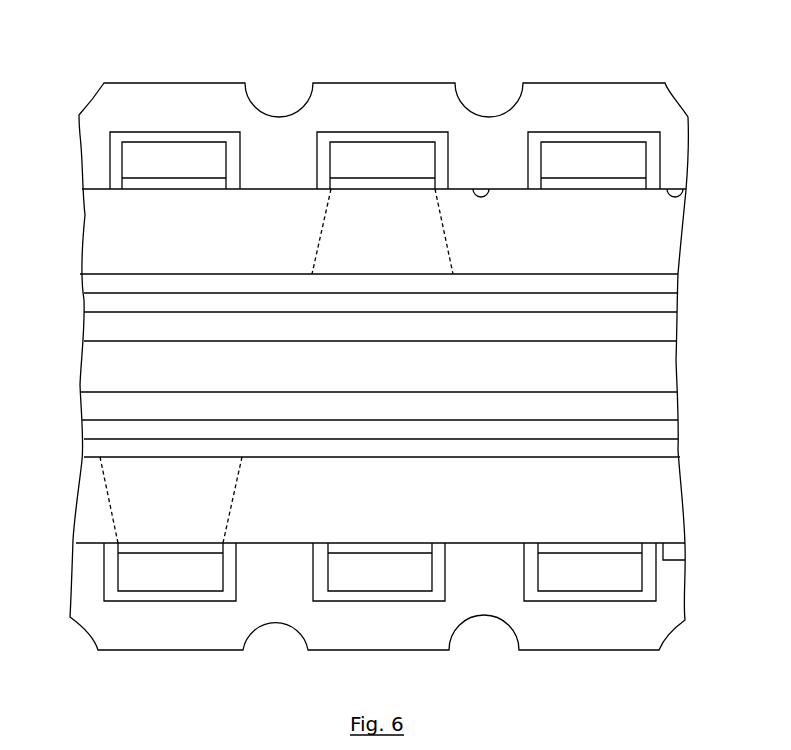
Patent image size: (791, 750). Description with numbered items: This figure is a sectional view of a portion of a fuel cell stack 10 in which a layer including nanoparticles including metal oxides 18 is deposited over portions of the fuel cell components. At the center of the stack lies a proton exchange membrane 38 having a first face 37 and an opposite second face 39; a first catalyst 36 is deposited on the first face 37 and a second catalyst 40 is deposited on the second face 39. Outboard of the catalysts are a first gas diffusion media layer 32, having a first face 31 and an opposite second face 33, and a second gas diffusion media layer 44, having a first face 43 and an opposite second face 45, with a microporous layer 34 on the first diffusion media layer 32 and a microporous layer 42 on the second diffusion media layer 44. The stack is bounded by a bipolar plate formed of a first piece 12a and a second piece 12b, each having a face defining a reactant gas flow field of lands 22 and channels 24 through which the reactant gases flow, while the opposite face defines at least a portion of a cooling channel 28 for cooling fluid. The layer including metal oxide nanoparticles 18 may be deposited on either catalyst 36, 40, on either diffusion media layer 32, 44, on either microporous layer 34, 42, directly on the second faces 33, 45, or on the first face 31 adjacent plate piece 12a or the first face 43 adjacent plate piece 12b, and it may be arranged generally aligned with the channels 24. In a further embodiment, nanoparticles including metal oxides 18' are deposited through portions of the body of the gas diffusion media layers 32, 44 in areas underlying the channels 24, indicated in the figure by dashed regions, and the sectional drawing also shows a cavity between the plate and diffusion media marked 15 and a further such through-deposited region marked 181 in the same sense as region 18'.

The semiconductor device 10 is at (82, 72).
The first piece 12a is at (667, 127).
The second piece 12b is at (670, 593).
The chip 15 is at (600, 140).
The layer including nanoparticles including metal oxides 18 is at (410, 364).
The nanoparticles including metal oxides 18' is at (245, 253).
The metal via region 181 is at (100, 482).
The lands 22 is at (480, 197).
The channels 24 is at (335, 170).
The cooling channel 28 is at (380, 182).
The first face 31 is at (95, 187).
The first gas diffusion media layer 32 is at (658, 258).
The second face 33 is at (106, 275).
The microporous layer 34 is at (653, 285).
The first catalyst 36 is at (653, 327).
The first face 37 is at (630, 340).
The proton exchange membrane 38 is at (657, 358).
The second face 39 is at (650, 395).
The second catalyst 40 is at (633, 407).
The microporous layer 42 is at (657, 445).
The first face 43 is at (685, 558).
The second gas diffusion media layer 44 is at (653, 507).
The second face 45 is at (660, 457).